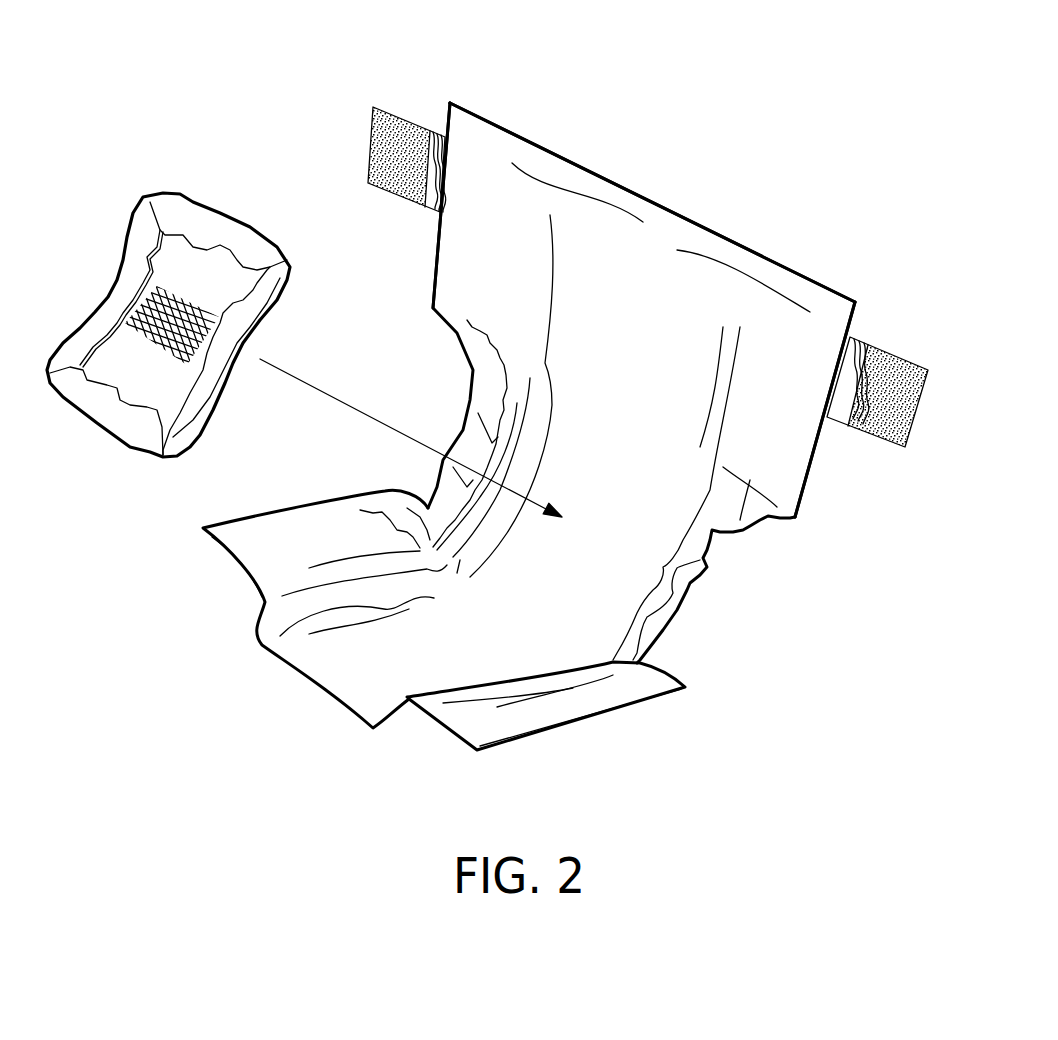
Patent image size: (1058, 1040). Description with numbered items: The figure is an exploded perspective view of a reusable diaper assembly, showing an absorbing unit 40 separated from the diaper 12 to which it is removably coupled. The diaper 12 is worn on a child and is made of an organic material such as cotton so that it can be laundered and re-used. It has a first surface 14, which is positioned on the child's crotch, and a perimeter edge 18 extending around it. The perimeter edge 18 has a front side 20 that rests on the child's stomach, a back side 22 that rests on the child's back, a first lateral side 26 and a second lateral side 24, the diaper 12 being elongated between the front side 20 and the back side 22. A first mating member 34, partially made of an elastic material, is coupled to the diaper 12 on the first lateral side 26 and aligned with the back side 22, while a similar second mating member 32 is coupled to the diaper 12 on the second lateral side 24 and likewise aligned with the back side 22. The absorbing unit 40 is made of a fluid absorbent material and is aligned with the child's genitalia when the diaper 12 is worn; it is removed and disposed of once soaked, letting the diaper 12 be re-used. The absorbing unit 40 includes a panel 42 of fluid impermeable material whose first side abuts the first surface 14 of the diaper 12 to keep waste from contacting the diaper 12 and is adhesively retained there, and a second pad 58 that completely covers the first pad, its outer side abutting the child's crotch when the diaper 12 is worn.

The diaper 12 is at (597, 172).
The first surface 14 is at (685, 313).
The perimeter edge 18 is at (522, 137).
The front side 20 is at (294, 674).
The back side 22 is at (783, 262).
The second lateral side 24 is at (432, 287).
The first lateral side 26 is at (803, 490).
The second mating member 32 is at (402, 113).
The first mating member 34 is at (912, 362).
The absorbing unit 40 is at (203, 197).
The panel 42 is at (218, 232).
The second pad 58 is at (150, 310).